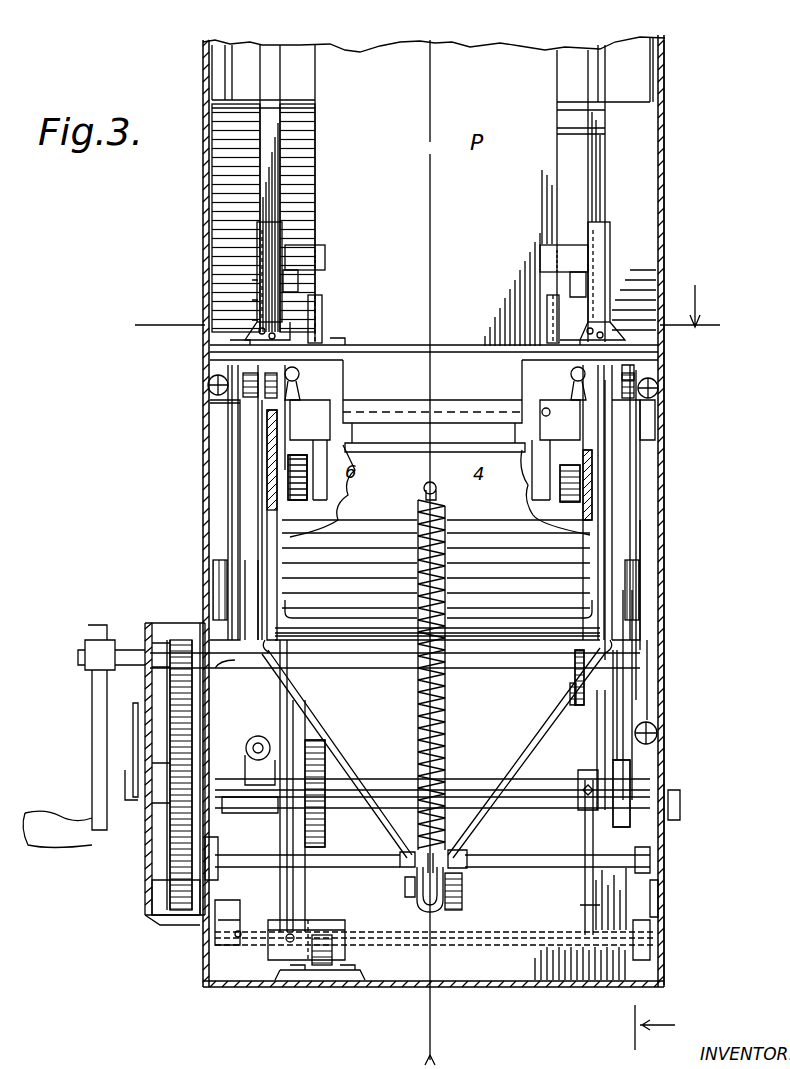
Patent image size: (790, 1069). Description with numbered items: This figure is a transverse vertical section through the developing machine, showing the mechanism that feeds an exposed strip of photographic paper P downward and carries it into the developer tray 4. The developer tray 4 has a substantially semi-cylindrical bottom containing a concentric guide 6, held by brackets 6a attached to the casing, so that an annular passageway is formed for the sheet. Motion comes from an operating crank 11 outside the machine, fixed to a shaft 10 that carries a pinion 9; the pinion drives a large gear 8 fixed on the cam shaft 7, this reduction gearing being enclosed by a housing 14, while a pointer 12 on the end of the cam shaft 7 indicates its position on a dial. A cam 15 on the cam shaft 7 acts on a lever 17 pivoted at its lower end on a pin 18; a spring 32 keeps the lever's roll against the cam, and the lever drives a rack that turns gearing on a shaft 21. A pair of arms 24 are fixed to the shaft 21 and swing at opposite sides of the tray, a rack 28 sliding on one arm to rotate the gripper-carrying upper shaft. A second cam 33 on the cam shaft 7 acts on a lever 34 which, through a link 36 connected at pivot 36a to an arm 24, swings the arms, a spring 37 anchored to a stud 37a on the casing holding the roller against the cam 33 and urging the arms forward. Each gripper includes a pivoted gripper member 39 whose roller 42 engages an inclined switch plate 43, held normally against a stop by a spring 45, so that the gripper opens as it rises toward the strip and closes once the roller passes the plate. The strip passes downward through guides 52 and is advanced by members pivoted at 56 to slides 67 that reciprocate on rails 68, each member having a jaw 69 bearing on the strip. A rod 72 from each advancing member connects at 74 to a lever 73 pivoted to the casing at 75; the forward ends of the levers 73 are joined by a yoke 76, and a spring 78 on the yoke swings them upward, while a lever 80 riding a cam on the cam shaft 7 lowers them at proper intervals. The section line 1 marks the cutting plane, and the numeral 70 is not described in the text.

The center line 1 is at (445, 32).
The developer tray 4 is at (672, 200).
The guide 6 is at (429, 310).
The brackets 6a is at (208, 398).
The cam shaft 7 is at (480, 778).
The large gear 8 is at (152, 918).
The pinion 9 is at (178, 623).
The shaft 10 is at (372, 668).
The operating crank 11 is at (42, 822).
The indicator or pointer 12 is at (135, 712).
The housing 14 is at (148, 905).
The cam 15 is at (308, 892).
The lever 17 is at (280, 878).
The pin or shaft 18 is at (362, 935).
The shaft 21 is at (366, 812).
The arms 24 is at (222, 416).
The rack 28 is at (268, 550).
The spring 32 is at (300, 758).
The cam 33 is at (592, 856).
The lever 34 is at (585, 890).
The link 36 is at (575, 684).
The pivotal connection 36a is at (572, 700).
The spring 37 is at (655, 726).
The stud 37a is at (655, 745).
The gripper member 39 is at (330, 492).
The roller or projection 42 is at (350, 384).
The switch plate 43 is at (298, 502).
The spring 45 is at (298, 372).
The guides 52 is at (323, 303).
The pivot 56 is at (300, 288).
The slides 67 is at (282, 242).
The rails 68 is at (270, 178).
The jaw 69 is at (325, 248).
The screw 70 is at (212, 380).
The rod 72 is at (262, 530).
The lever 73 is at (642, 534).
The attachment point 74 is at (500, 808).
The pivot 75 is at (648, 420).
The yoke-like member 76 is at (545, 738).
The spring 78 is at (446, 690).
The lever 80 is at (462, 868).